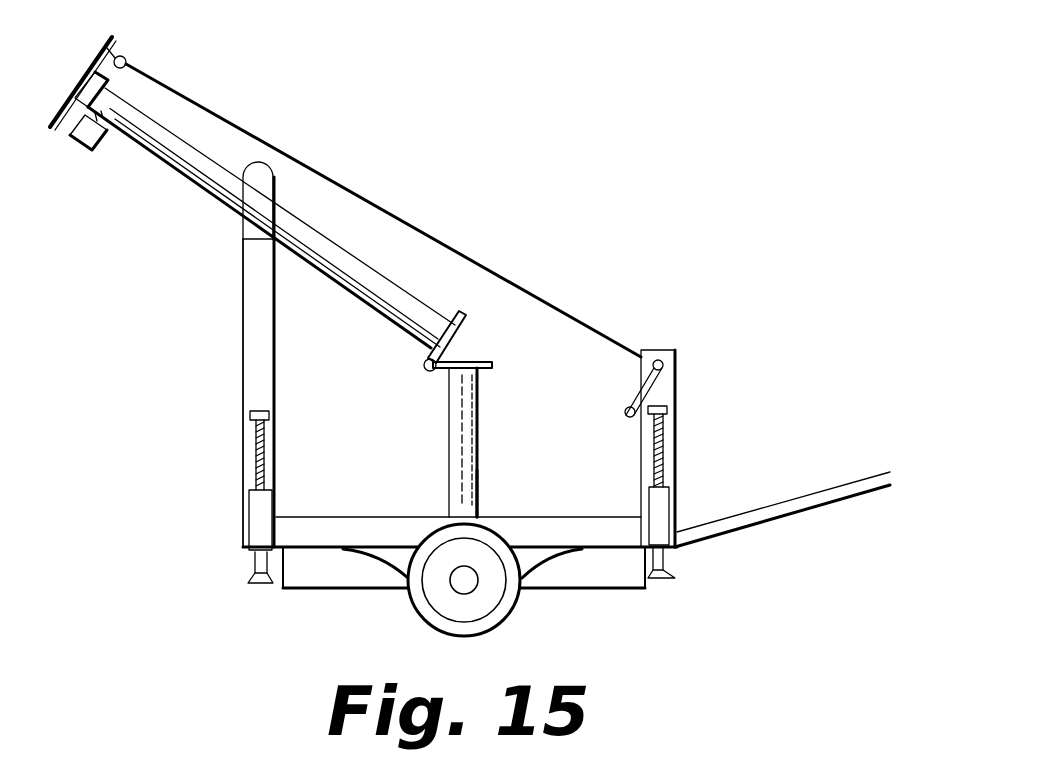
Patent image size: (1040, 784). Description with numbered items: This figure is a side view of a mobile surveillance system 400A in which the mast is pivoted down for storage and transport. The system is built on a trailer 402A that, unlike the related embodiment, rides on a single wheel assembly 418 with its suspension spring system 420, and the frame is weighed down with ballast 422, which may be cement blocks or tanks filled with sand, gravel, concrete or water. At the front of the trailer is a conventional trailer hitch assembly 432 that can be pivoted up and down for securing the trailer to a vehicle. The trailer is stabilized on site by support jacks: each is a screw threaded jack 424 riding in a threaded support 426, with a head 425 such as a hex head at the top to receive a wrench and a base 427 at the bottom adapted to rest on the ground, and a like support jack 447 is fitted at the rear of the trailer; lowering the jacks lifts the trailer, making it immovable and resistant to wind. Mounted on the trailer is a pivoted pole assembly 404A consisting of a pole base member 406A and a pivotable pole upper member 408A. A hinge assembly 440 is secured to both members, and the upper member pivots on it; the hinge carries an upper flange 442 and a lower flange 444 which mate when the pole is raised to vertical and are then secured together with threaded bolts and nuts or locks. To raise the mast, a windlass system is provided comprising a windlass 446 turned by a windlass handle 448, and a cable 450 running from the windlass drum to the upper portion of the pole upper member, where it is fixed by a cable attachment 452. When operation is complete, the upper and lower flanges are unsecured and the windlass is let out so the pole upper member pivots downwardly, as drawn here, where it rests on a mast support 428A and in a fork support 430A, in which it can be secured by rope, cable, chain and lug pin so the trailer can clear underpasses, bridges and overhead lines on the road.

The mobile surveillance system 400A is at (504, 200).
The trailer 402A is at (233, 620).
The pole assembly 404A is at (453, 443).
The pole base member 406A is at (477, 477).
The pole upper member 408A is at (363, 273).
The wheel assembly 418 is at (413, 610).
The suspension spring system 420 is at (552, 565).
The ballast 422 is at (613, 578).
The screw threaded jack 424 is at (255, 455).
The head 425 is at (270, 415).
The threaded support 426 is at (252, 510).
The base 427 is at (670, 580).
The mast support 428A is at (268, 338).
The fork support 430A is at (248, 220).
The trailer hitch assembly 432 is at (732, 532).
The hinge assembly 440 is at (492, 365).
The upper flange 442 is at (468, 310).
The lower flange 444 is at (462, 360).
The windlass 446 is at (677, 358).
The rear jack 447 is at (668, 445).
The windlass handle 448 is at (627, 397).
The cable 450 is at (573, 313).
The cable attachment 452 is at (126, 60).